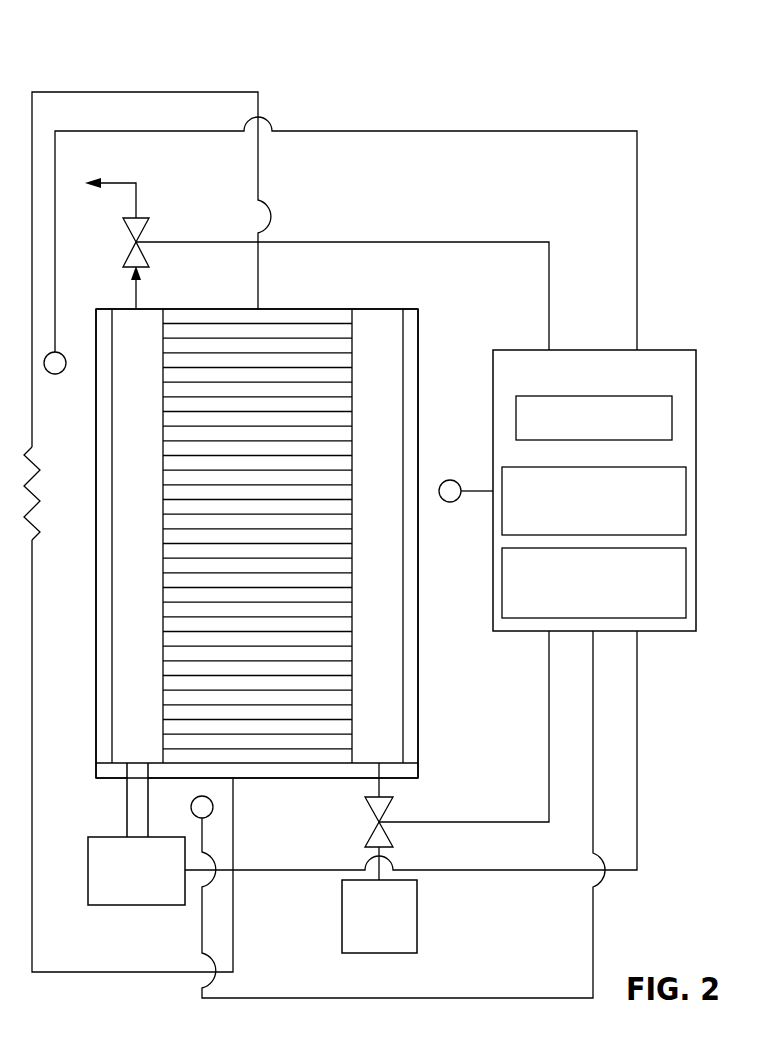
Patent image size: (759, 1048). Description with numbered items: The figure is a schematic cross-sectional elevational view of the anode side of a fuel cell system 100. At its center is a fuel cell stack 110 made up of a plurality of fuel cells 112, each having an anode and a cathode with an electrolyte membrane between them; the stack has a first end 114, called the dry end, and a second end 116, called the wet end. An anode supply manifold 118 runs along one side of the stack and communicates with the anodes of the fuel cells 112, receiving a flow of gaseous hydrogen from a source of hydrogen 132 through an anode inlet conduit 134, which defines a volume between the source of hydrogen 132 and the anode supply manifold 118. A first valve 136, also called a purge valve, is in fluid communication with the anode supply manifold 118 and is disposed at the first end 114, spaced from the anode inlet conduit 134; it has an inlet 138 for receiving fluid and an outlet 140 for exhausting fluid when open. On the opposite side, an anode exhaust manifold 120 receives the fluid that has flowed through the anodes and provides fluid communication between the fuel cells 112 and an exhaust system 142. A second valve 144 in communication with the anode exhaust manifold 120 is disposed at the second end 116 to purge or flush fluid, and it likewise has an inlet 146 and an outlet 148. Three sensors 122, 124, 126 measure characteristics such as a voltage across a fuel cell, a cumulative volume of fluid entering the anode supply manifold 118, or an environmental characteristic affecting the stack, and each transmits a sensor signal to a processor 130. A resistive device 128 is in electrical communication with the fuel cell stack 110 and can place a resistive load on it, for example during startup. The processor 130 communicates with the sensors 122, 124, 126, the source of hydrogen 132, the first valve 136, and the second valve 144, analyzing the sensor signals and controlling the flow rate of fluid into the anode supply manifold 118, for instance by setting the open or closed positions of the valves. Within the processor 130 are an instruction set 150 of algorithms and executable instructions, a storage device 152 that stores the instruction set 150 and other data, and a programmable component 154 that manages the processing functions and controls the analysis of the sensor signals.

The fuel cell system 100 is at (642, 84).
The fuel cell stack 110 is at (309, 299).
The fuel cells 112 is at (335, 362).
The first end 114 is at (223, 308).
The second end 116 is at (272, 779).
The anode supply manifold 118 is at (112, 630).
The anode exhaust manifold 120 is at (405, 693).
The sensor 122 is at (55, 374).
The sensor 124 is at (191, 808).
The sensor 126 is at (450, 480).
The resistive device 128 is at (40, 493).
The processor 130 is at (673, 350).
The source of hydrogen 132 is at (135, 905).
The anode inlet conduit 134 is at (127, 796).
The first valve 136 is at (147, 221).
The inlet 138 is at (138, 295).
The outlet 140 is at (120, 177).
The exhaust system 142 is at (342, 914).
The second valve 144 is at (363, 801).
The inlet 146 is at (393, 791).
The outlet 148 is at (386, 848).
The instruction set 150 is at (672, 397).
The storage device 152 is at (686, 467).
The programmable component 154 is at (673, 548).